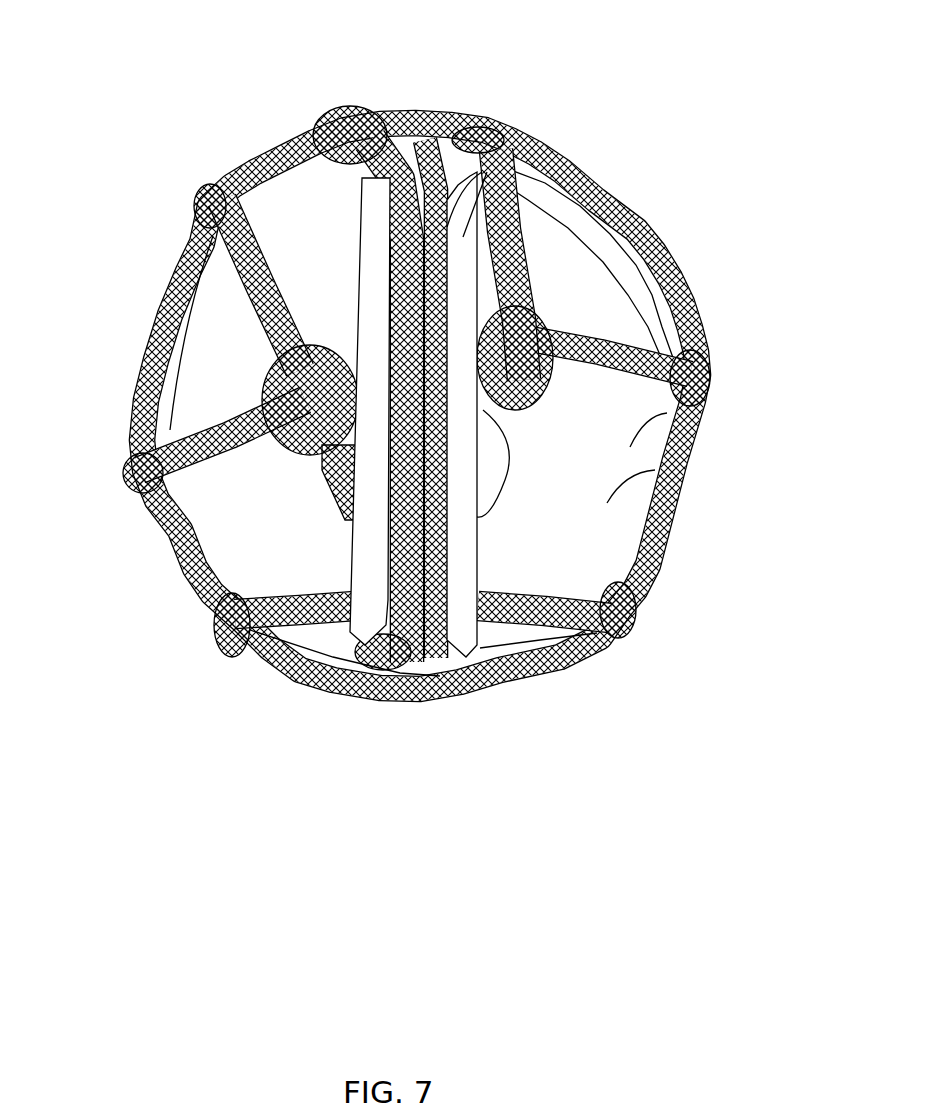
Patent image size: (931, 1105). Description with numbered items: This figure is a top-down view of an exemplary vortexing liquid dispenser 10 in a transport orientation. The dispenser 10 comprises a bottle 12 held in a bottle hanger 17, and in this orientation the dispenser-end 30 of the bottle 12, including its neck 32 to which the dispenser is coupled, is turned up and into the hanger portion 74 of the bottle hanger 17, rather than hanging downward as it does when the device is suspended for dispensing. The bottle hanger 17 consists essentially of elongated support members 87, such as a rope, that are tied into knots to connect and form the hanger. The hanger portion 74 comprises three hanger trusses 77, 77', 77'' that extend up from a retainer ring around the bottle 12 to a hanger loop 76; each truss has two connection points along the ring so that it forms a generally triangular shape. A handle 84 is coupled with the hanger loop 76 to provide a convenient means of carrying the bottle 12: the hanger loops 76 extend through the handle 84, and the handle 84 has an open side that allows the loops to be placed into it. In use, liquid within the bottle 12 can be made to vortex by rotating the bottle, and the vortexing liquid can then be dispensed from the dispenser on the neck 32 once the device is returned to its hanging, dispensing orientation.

The vortexing liquid dispenser 10 is at (622, 188).
The bottle 12 is at (700, 430).
The bottle hanger 17 is at (667, 282).
The dispenser-end 30 is at (688, 488).
The neck 32 is at (158, 347).
The hanger portion 74 is at (184, 253).
The hanger loop 76 is at (407, 133).
The hanger truss 77 is at (280, 285).
The hanger truss 77' is at (607, 323).
The hanger truss 77'' is at (544, 566).
The handle 84 is at (562, 176).
The elongated support members 87 is at (635, 235).